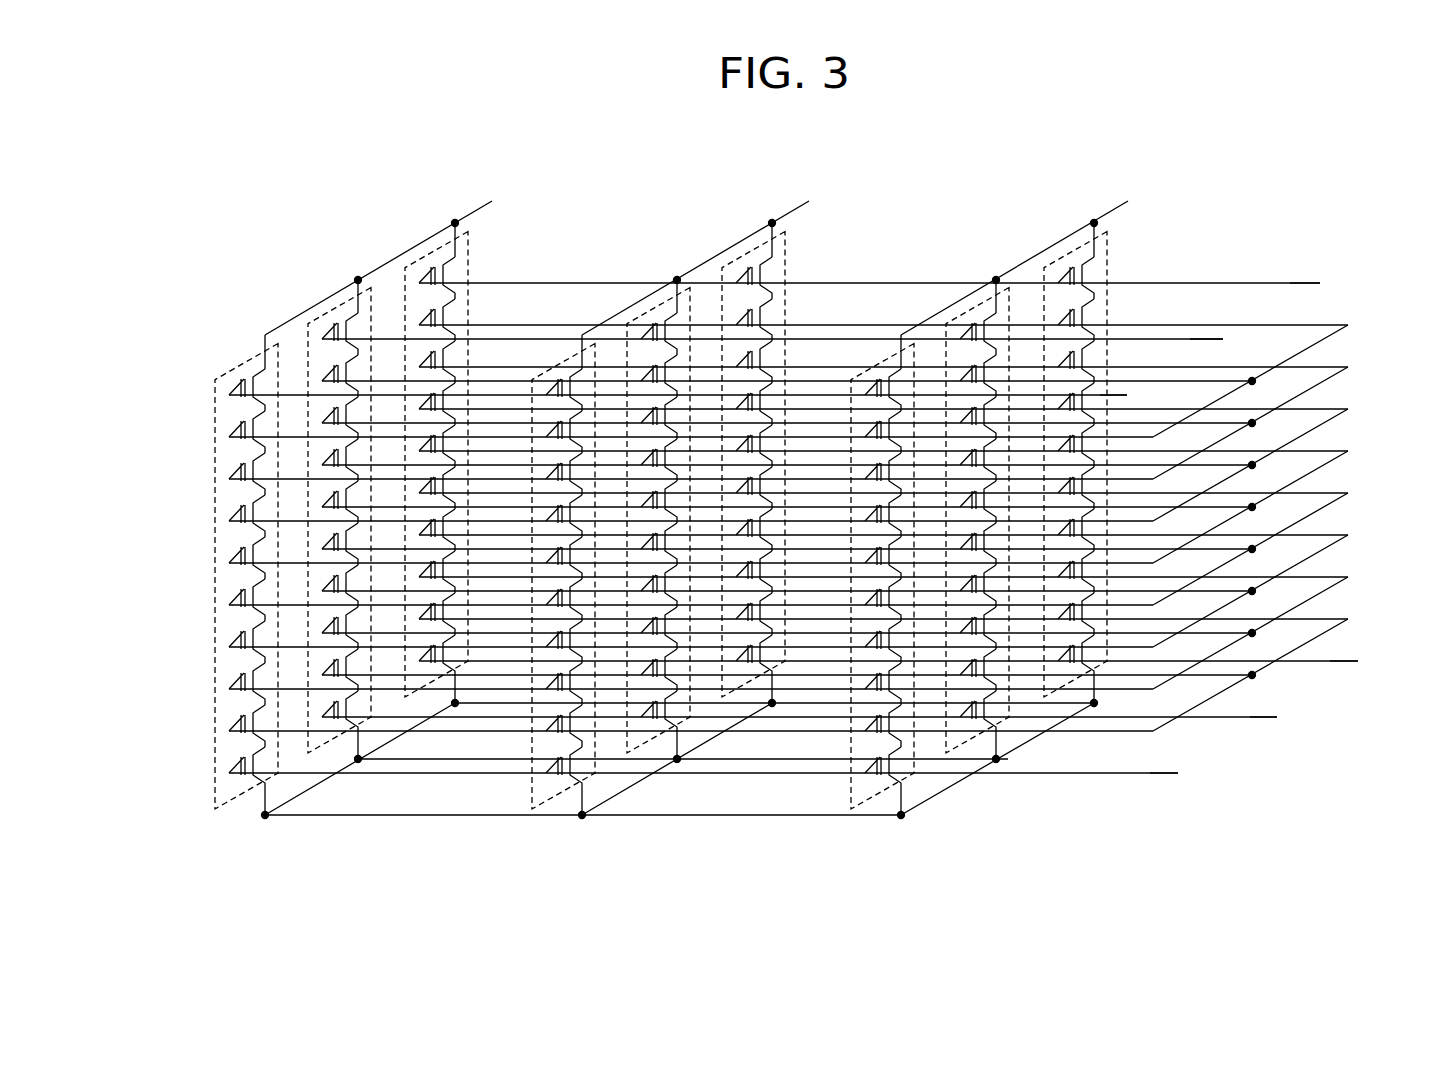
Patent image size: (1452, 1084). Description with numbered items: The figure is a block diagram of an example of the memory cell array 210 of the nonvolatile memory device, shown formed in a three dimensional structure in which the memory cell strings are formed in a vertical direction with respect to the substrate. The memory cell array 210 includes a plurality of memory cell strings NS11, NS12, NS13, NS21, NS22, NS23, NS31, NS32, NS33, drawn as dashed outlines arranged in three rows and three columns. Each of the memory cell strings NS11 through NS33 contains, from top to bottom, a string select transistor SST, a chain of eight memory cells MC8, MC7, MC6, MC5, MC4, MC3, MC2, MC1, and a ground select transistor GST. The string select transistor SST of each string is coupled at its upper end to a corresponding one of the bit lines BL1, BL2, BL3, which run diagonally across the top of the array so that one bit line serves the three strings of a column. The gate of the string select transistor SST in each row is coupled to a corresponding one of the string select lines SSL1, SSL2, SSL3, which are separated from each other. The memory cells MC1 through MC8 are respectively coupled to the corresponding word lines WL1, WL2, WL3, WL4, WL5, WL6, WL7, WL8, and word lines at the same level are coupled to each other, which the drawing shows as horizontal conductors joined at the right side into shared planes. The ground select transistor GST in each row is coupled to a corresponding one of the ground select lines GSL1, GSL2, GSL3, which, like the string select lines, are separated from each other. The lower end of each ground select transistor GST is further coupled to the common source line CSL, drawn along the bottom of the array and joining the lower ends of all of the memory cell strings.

The memory cell array 210 is at (758, 167).
The memory cell string NS11 is at (237, 372).
The memory cell string NS12 is at (560, 363).
The memory cell string NS13 is at (878, 364).
The memory cell string NS21 is at (338, 308).
The memory cell string NS22 is at (656, 308).
The memory cell string NS23 is at (975, 308).
The memory cell string NS31 is at (433, 250).
The memory cell string NS32 is at (750, 252).
The memory cell string NS33 is at (1070, 252).
The bit line BL1 is at (390, 257).
The bit line BL2 is at (708, 257).
The bit line BL3 is at (1027, 257).
The string select line SSL1 is at (1140, 395).
The string select line SSL2 is at (1235, 339).
The string select line SSL3 is at (1333, 283).
The word line WL1 is at (1252, 675).
The word line WL2 is at (1252, 633).
The word line WL3 is at (1252, 591).
The word line WL4 is at (1252, 549).
The word line WL5 is at (1252, 507).
The word line WL6 is at (1252, 465).
The word line WL7 is at (1252, 423).
The word line WL8 is at (1252, 381).
The ground select line GSL1 is at (1192, 773).
The ground select line GSL2 is at (1293, 717).
The ground select line GSL3 is at (1376, 661).
The common source line CSL is at (680, 759).
The string select transistor SST is at (232, 383).
The ground select transistor GST is at (232, 761).
The memory cell MC1 is at (232, 719).
The memory cell MC2 is at (232, 677).
The memory cell MC3 is at (232, 635).
The memory cell MC4 is at (232, 593).
The memory cell MC5 is at (232, 551).
The memory cell MC6 is at (232, 509).
The memory cell MC7 is at (232, 467).
The memory cell MC8 is at (232, 425).